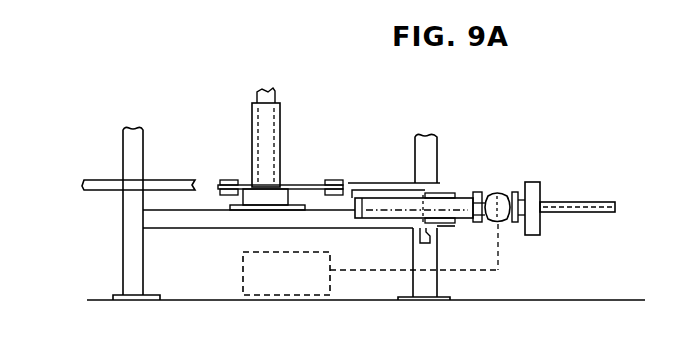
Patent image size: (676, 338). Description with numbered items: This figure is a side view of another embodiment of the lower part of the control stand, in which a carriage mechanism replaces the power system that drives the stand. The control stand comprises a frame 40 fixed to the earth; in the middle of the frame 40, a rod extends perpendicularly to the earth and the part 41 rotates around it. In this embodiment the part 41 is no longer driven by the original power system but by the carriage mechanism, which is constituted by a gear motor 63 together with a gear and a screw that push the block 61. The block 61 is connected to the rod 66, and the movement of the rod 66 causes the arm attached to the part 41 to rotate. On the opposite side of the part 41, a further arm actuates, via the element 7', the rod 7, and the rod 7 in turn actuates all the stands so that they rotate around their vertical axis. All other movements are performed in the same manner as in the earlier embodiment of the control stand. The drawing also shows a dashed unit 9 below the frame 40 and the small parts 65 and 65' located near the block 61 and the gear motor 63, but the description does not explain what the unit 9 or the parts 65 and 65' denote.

The rod 7 is at (136, 159).
The element 7' is at (280, 169).
The drive unit 9 is at (243, 273).
The frame 40 is at (258, 93).
The part 41 is at (252, 128).
The block 61 is at (446, 194).
The gear motor 63 is at (501, 222).
The ball joint 65 is at (491, 187).
The bracket 65' is at (415, 247).
The rod 66 is at (368, 185).